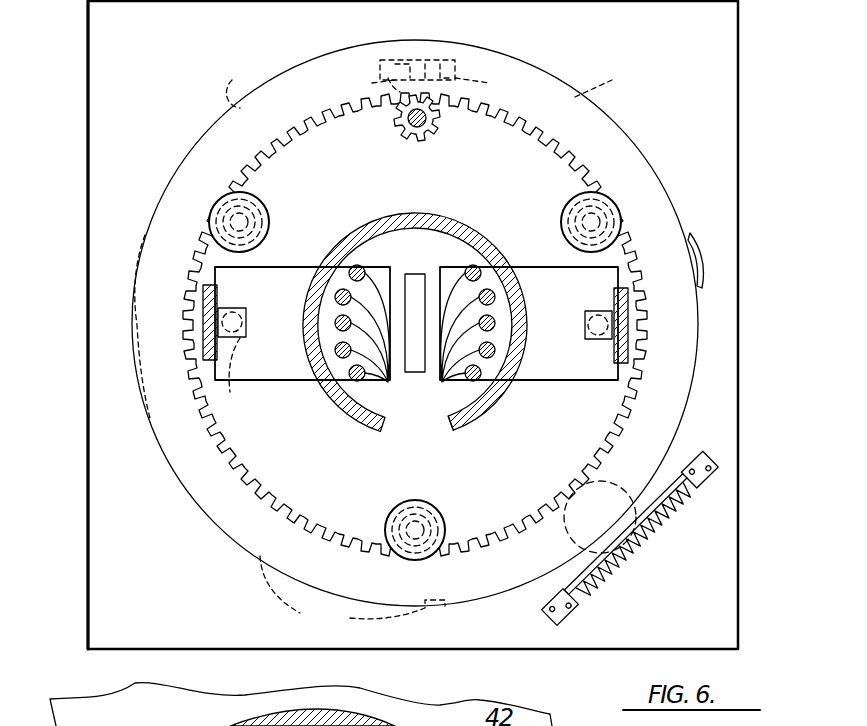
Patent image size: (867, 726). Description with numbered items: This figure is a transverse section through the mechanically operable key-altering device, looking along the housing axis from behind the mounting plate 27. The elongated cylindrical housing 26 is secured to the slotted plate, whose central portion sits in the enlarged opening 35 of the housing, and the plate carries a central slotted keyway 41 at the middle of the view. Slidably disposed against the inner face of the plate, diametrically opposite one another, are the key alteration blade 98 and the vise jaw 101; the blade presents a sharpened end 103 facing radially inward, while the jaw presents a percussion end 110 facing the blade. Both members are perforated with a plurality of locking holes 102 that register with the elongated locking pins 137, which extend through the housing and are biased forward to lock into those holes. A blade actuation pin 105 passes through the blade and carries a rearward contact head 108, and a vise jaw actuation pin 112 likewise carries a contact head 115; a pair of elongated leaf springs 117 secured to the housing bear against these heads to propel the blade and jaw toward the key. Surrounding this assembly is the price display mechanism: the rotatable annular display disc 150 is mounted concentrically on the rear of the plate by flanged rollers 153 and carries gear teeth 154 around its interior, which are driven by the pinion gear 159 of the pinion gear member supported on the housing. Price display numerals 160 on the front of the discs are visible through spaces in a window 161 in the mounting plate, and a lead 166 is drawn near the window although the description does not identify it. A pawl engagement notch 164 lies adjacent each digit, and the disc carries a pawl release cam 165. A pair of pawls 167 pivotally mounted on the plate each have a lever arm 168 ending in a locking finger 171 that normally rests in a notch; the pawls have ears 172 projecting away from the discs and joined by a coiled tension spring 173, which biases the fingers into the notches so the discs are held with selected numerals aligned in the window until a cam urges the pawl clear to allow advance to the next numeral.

The housing 26 is at (440, 220).
The mounting plate 27 is at (88, 512).
The enlarged opening 35 is at (450, 422).
The central slotted keyway 41 is at (416, 275).
The key alteration blade 98 is at (558, 380).
The vise jaw 101 is at (268, 373).
The locking holes 102 is at (390, 380).
The sharpened end 103 is at (437, 268).
The blade actuation pin 105 is at (588, 335).
The contact head 108 is at (592, 314).
The percussion end 110 is at (405, 270).
The vise jaw actuation pin 112 is at (242, 308).
The contact head 115 is at (239, 377).
The leaf springs 117 is at (204, 304).
The locking pins 137 is at (348, 265).
The display disc 150 is at (218, 503).
The flanged rollers 153 is at (269, 216).
The gear teeth 154 is at (558, 490).
The pinion gear 159 is at (430, 140).
The price display numerals 160 is at (392, 55).
The window 161 is at (493, 82).
The pawl engagement notch 164 is at (376, 343).
The pawl release cam 165 is at (700, 260).
The switch lead 166 is at (365, 82).
The pawls 167 is at (642, 558).
The lever arm 168 is at (635, 541).
The locking finger 171 is at (600, 509).
The ear 172 is at (630, 538).
The coiled tension spring 173 is at (625, 534).